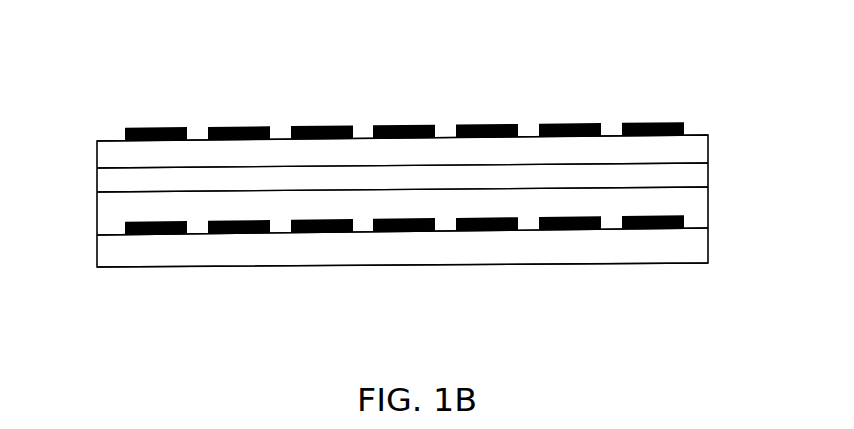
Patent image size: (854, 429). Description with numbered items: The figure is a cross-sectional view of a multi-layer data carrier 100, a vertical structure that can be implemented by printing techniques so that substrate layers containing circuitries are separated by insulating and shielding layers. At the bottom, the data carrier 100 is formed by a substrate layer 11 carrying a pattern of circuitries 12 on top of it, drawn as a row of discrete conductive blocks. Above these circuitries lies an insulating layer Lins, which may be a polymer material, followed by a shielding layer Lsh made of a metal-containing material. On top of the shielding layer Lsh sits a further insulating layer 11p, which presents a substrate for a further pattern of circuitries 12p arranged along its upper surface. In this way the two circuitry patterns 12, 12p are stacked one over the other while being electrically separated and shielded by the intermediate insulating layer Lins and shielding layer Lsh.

The multi-layer data carrier 100 is at (644, 85).
The substrate layer 11 is at (682, 242).
The further insulating layer 11p is at (115, 160).
The pattern of circuitries 12 is at (683, 220).
The further pattern of circuitries 12p is at (322, 128).
The shielding layer Lsh is at (107, 180).
The insulating layer Lins is at (603, 205).